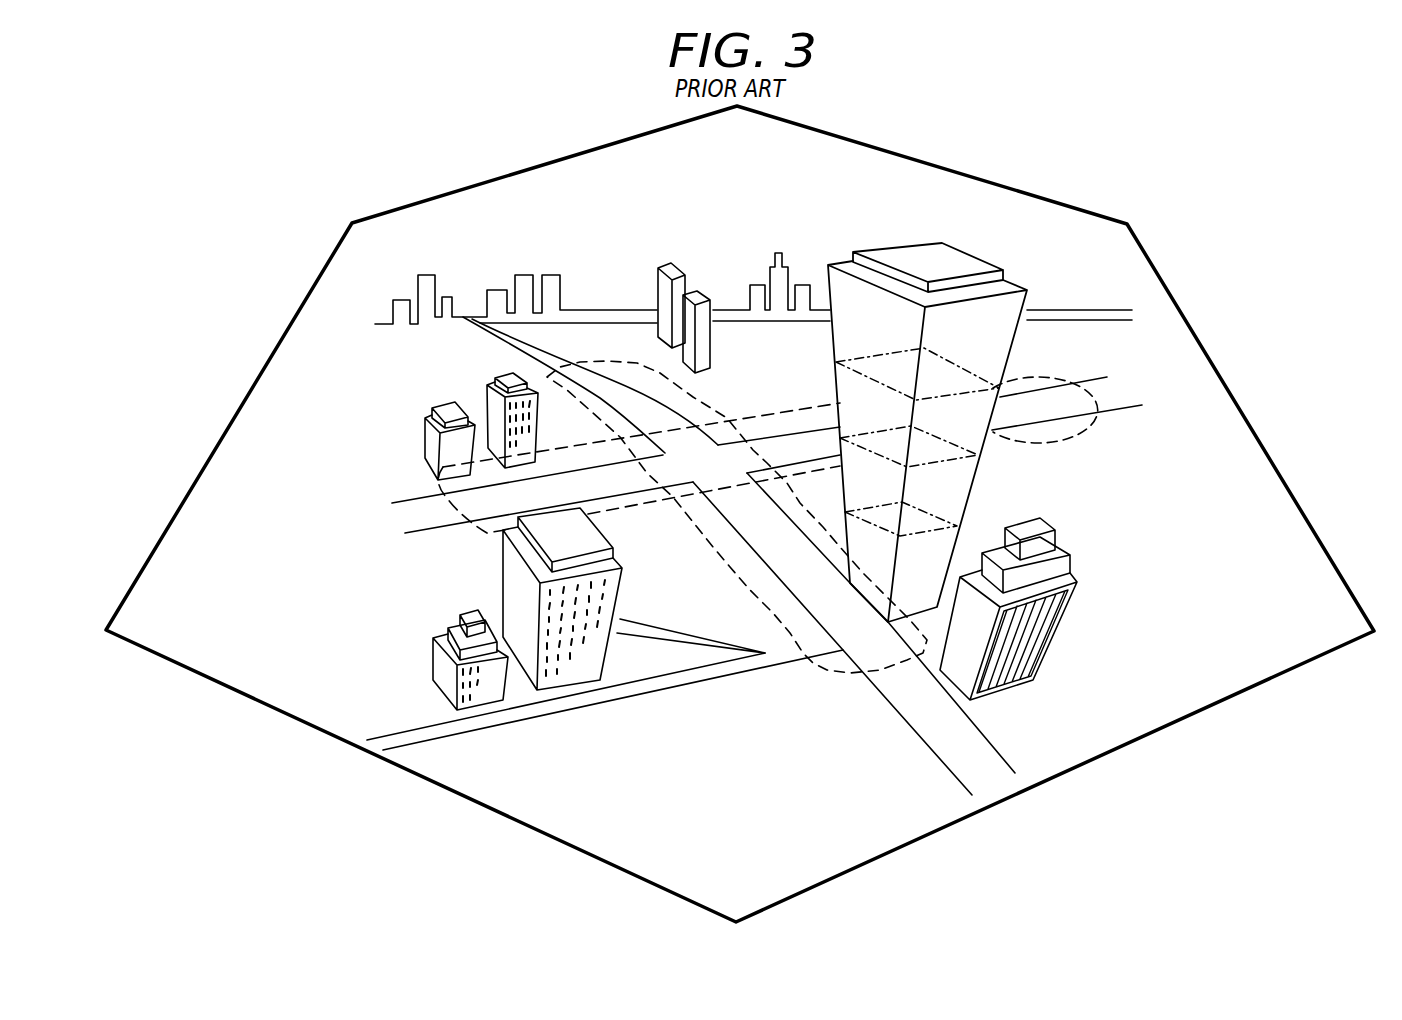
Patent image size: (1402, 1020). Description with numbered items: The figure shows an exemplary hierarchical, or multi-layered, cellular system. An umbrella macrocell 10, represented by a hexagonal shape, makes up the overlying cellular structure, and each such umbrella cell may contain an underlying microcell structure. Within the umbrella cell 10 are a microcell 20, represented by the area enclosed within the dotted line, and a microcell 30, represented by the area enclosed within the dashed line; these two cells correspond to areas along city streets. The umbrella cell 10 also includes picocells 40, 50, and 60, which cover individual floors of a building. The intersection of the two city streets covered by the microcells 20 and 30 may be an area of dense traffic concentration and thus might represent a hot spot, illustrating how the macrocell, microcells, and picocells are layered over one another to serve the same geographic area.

The umbrella macrocell 10 is at (450, 791).
The microcell 20 is at (618, 361).
The microcell 30 is at (445, 501).
The picocell 40 is at (984, 384).
The picocell 50 is at (980, 457).
The picocell 60 is at (897, 560).